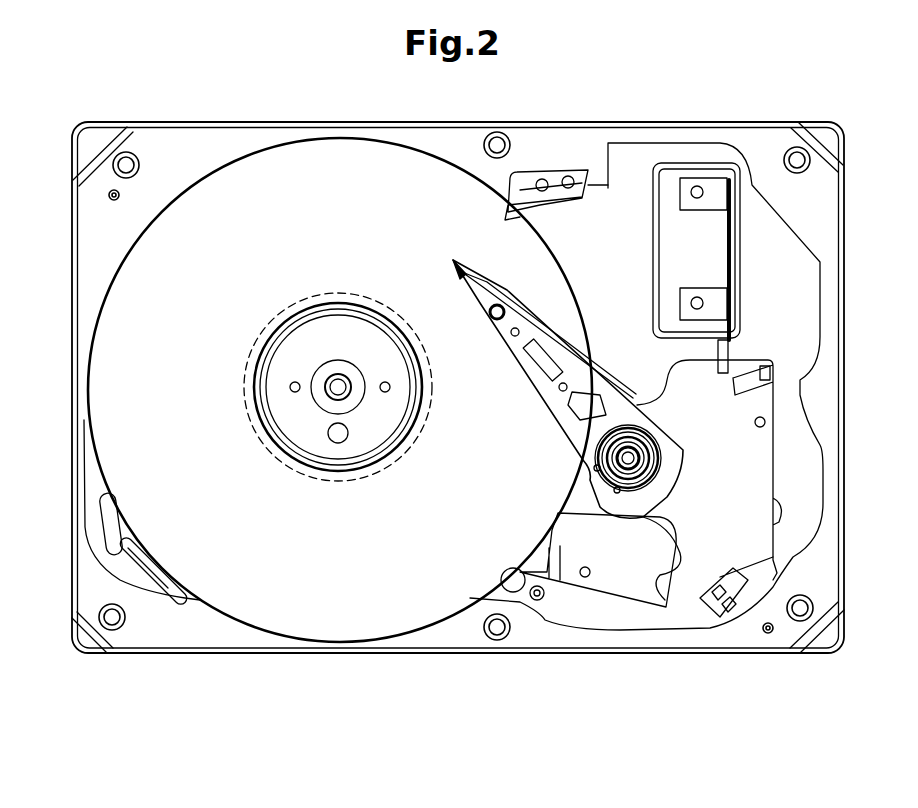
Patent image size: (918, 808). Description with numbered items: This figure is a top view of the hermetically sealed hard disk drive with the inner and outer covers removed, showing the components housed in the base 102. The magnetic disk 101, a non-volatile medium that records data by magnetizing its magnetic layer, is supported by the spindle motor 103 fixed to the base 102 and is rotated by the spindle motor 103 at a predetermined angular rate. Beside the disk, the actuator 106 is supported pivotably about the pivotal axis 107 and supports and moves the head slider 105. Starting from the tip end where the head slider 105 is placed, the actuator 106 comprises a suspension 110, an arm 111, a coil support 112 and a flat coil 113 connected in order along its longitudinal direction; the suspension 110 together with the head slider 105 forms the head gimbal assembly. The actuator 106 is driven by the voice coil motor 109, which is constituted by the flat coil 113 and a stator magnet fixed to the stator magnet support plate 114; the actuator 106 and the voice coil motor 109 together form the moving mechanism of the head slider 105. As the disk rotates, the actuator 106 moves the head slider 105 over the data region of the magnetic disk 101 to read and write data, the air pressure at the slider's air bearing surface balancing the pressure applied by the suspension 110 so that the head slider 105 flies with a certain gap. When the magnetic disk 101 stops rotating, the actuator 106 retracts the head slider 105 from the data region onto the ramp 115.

The magnetic disk 101 is at (567, 280).
The base 102 is at (394, 653).
The spindle motor 103 is at (310, 477).
The head slider 105 is at (460, 270).
The actuator 106 is at (501, 367).
The pivotal axis 107 is at (615, 458).
The voice coil motor 109 is at (574, 613).
The suspension 110 is at (478, 300).
The arm 111 is at (540, 405).
The coil support 112 is at (640, 590).
The flat coil 113 is at (665, 583).
The stator magnet support plate 114 is at (600, 588).
The ramp 115 is at (510, 210).